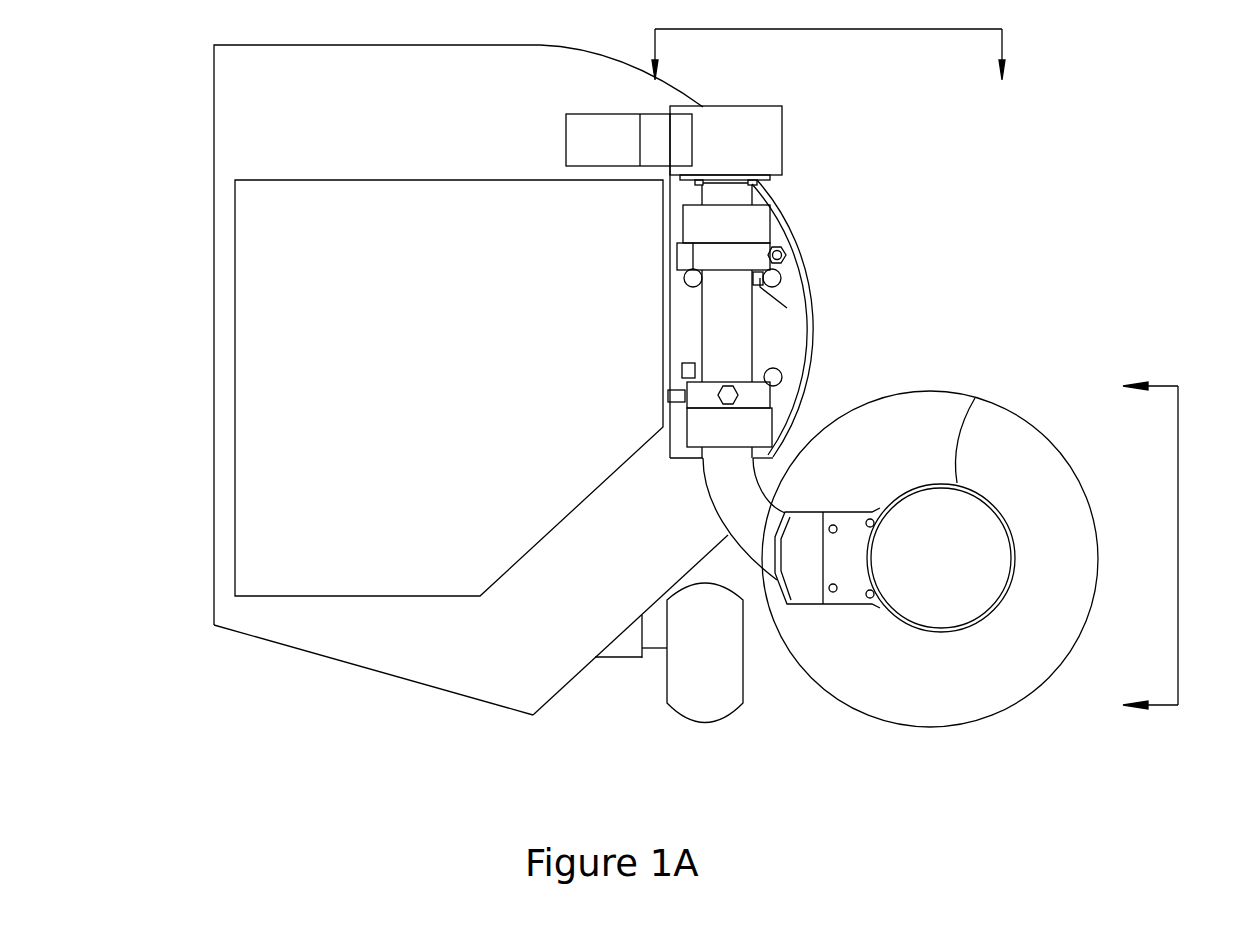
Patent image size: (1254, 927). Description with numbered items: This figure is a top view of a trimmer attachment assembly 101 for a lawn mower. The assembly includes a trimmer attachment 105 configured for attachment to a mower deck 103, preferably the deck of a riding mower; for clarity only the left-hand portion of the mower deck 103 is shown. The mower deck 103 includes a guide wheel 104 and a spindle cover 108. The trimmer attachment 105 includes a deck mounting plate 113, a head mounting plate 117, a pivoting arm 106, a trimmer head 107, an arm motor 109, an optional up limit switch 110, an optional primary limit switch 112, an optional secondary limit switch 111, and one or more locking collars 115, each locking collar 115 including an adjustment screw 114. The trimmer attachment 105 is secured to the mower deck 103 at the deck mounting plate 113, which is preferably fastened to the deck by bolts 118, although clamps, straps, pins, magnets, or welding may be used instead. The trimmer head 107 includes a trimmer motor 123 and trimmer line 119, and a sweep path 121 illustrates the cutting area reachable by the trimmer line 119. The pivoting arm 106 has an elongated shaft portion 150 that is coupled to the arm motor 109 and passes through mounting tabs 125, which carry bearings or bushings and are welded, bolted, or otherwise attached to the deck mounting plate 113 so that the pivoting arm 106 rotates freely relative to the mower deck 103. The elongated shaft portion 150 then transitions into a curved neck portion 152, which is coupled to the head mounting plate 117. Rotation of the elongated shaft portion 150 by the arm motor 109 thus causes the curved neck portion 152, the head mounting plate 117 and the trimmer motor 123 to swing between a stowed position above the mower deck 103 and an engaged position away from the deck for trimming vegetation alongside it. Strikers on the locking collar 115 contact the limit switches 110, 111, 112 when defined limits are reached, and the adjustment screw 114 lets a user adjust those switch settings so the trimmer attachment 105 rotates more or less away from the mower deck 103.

The trimmer attachment assembly 101 is at (430, 313).
The mower deck 103 is at (396, 388).
The guide wheel 104 is at (618, 704).
The trimmer attachment 105 is at (828, 40).
The pivoting arm 106 is at (513, 609).
The trimmer head 107 is at (1185, 545).
The spindle cover 108 is at (364, 631).
The arm motor 109 is at (802, 136).
The up limit switch 110 is at (842, 318).
The secondary limit switch 111 is at (418, 464).
The primary limit switch 112 is at (407, 423).
The deck mounting plate 113 is at (920, 319).
The adjustment screw 114 is at (443, 493).
The locking collar 115 is at (885, 290).
The head mounting plate 117 is at (820, 660).
The bolts 118 is at (629, 300).
The trimmer line 119 is at (1036, 440).
The sweep path 121 is at (965, 559).
The trimmer motor 123 is at (996, 640).
The mounting tabs 125 is at (448, 406).
The elongated shaft portion 150 is at (443, 321).
The curved neck portion 152 is at (604, 615).